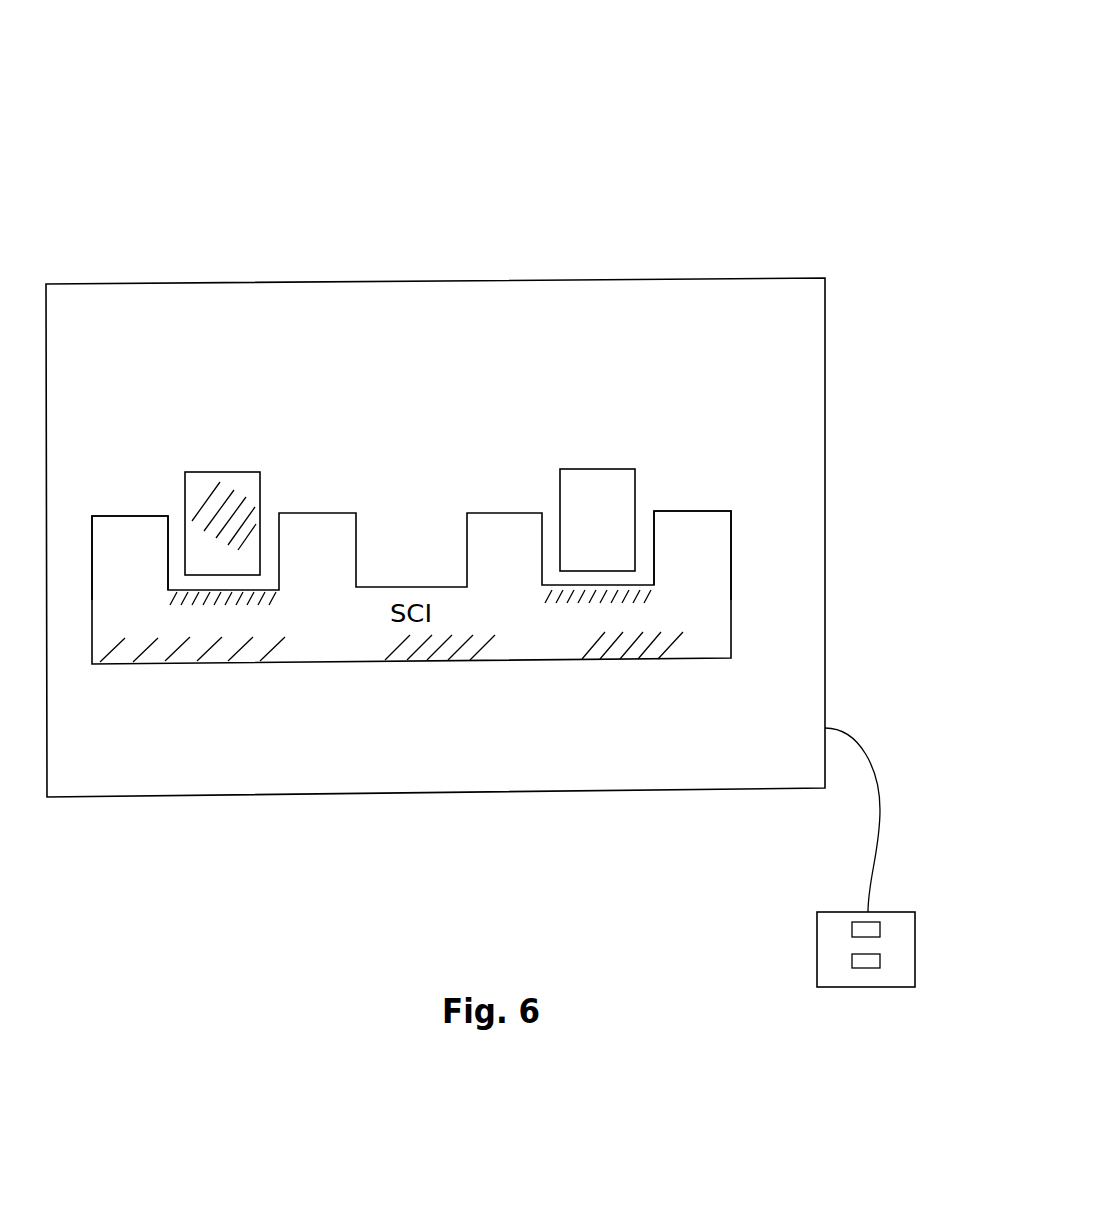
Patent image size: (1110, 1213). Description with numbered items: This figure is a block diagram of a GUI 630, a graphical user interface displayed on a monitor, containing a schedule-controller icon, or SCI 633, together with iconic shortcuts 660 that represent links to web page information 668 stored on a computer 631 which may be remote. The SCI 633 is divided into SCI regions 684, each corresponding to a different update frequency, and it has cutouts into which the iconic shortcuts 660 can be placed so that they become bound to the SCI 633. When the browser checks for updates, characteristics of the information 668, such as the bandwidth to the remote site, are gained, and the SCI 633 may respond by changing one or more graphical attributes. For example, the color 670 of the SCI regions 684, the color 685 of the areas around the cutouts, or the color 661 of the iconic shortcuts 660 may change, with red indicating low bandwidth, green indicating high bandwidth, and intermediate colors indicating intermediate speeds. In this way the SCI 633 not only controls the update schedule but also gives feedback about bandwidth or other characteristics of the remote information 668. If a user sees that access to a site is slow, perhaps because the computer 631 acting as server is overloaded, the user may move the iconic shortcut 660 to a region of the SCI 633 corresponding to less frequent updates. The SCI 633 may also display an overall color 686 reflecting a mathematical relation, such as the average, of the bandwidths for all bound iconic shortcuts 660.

The GUI 630 is at (660, 168).
The iconic shortcut 660 is at (596, 455).
The color of the iconic shortcuts 661 is at (213, 492).
The schedule-controller icon (SCI) 633 is at (686, 510).
The overall color of the SCI 686 is at (132, 527).
The color of areas around the cutouts 685 is at (643, 593).
The SCI region 684 is at (603, 659).
The color of the SCI regions 670 is at (660, 653).
The web page information 668 is at (852, 962).
The computer (server) 631 is at (817, 978).